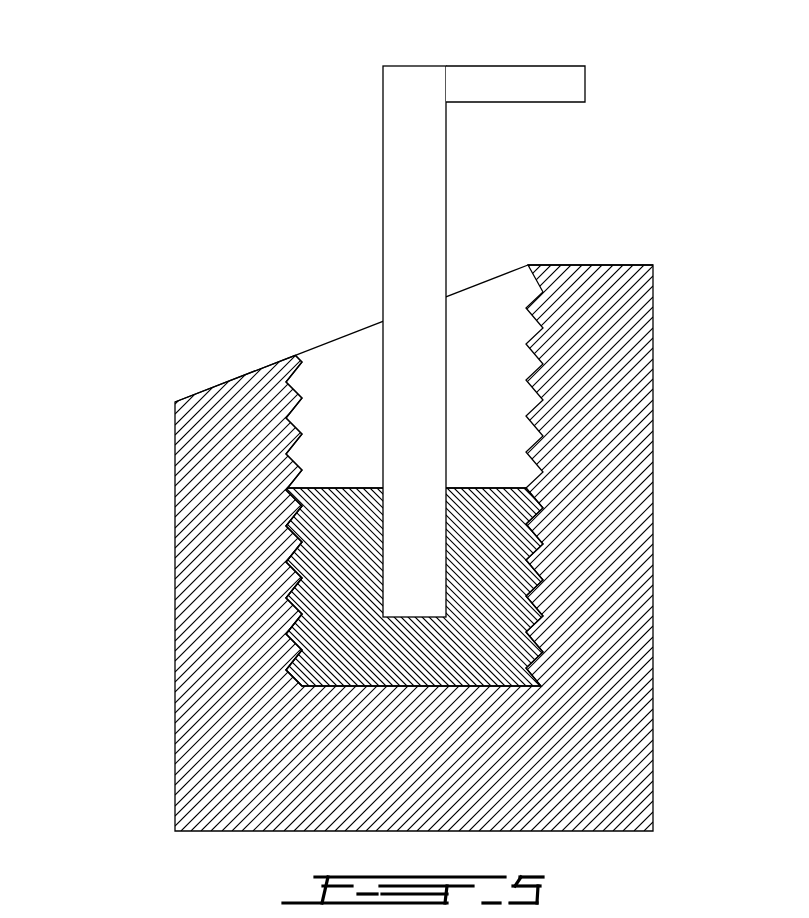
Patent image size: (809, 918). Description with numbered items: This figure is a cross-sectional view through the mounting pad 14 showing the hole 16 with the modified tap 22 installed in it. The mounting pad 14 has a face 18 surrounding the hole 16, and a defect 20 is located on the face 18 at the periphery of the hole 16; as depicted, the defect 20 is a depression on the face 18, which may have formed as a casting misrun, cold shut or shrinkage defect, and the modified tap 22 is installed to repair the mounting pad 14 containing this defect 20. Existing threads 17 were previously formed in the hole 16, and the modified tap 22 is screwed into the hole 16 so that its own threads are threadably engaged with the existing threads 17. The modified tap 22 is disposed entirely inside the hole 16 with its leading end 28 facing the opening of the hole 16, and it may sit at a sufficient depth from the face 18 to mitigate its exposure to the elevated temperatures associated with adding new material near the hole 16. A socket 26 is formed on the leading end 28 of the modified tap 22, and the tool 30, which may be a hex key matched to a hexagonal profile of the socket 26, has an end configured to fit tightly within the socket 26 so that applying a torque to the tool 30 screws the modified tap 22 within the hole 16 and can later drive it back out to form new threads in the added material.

The mounting pad 14 is at (595, 768).
The hole 16 is at (488, 312).
The threads 17 is at (300, 581).
The face 18 is at (597, 264).
The defect 20 is at (232, 378).
The modified tap 22 is at (340, 538).
The socket 26 is at (447, 572).
The leading end 28 is at (492, 487).
The tool 30 is at (585, 83).